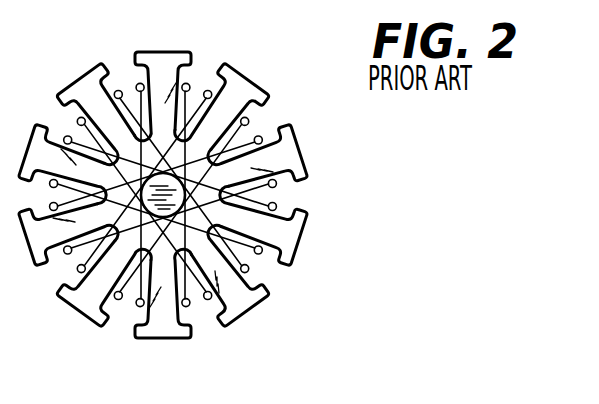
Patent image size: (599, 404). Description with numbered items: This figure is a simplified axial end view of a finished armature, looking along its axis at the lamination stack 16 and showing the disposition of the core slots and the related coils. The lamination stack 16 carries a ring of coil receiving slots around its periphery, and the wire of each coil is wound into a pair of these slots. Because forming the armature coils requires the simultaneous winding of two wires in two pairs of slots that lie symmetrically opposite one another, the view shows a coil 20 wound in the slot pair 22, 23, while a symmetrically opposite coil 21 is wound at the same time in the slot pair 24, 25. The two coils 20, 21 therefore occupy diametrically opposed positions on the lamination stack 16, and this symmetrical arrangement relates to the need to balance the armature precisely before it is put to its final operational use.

The lamination stack 16 is at (295, 160).
The coil 20 is at (78, 306).
The coil 21 is at (250, 88).
The slot 22 is at (125, 70).
The slot 23 is at (118, 326).
The slot 24 is at (206, 71).
The slot 25 is at (200, 328).